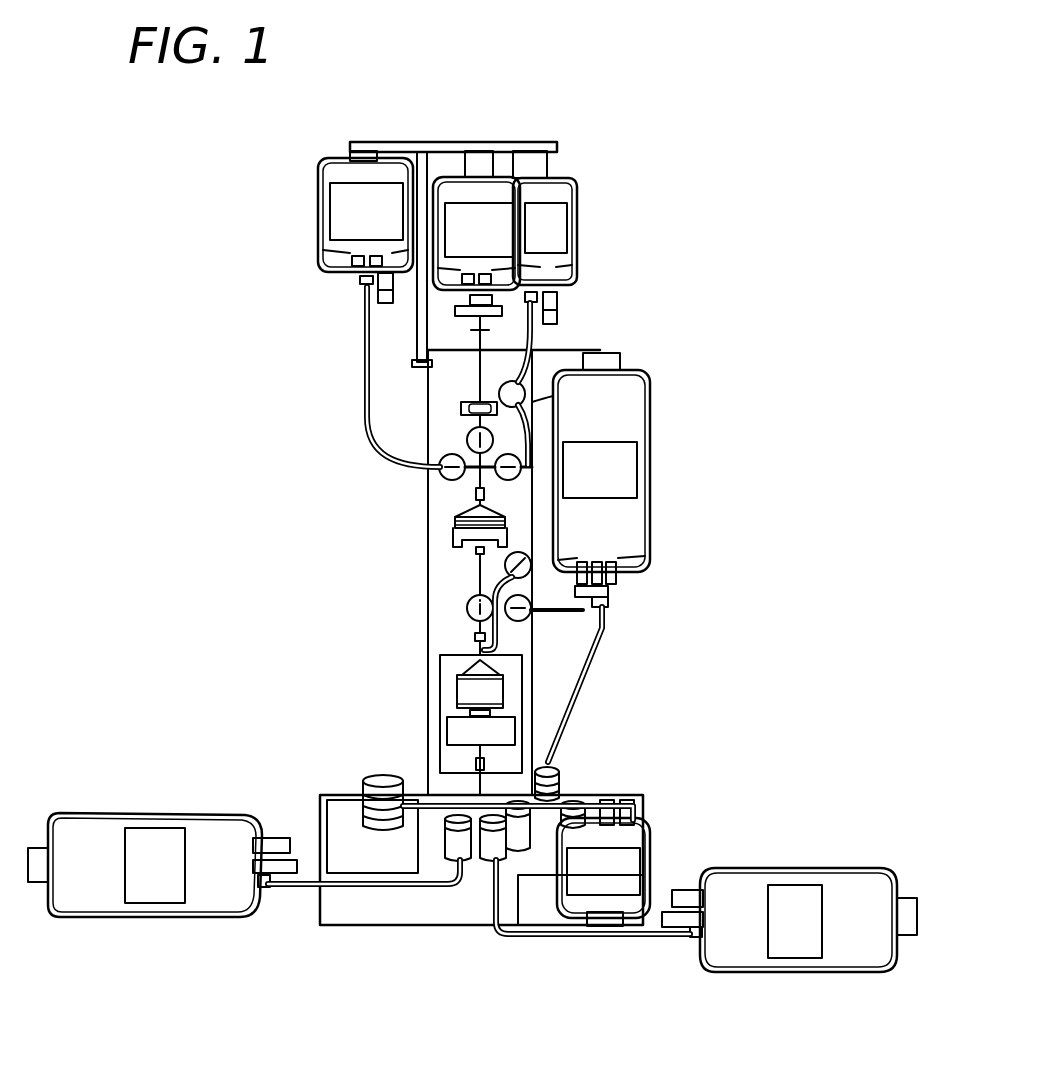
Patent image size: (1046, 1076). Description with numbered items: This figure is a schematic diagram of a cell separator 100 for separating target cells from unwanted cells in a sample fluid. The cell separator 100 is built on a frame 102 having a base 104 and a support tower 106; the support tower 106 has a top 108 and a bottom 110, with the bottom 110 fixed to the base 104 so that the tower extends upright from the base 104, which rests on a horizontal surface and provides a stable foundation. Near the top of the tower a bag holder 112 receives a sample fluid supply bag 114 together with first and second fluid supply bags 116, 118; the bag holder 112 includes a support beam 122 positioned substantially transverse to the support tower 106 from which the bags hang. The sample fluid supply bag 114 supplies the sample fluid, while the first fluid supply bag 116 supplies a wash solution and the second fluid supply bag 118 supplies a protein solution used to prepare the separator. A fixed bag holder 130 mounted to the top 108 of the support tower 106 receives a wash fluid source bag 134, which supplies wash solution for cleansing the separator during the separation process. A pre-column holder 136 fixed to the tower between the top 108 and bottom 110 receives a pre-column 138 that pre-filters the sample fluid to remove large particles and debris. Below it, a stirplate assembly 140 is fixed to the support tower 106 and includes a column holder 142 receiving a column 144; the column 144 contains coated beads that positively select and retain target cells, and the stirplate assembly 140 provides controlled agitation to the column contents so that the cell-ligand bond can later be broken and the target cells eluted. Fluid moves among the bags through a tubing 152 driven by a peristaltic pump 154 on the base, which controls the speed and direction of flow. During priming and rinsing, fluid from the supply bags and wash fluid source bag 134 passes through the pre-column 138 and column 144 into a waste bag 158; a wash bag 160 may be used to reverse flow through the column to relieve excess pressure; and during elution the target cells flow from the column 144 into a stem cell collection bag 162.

The cell separator 100 is at (687, 297).
The frame 102 is at (347, 557).
The base 104 is at (396, 927).
The support tower 106 is at (428, 607).
The top 108 is at (425, 377).
The bottom 110 is at (428, 752).
The bag holder 112 is at (588, 153).
The sample fluid supply bag 114 is at (449, 177).
The first fluid supply bag 116 is at (318, 185).
The second fluid supply bag 118 is at (578, 208).
The support beam 122 is at (483, 142).
The fixed bag holder 130 is at (570, 353).
The wash fluid source bag 134 is at (647, 422).
The pre-column holder 136 is at (447, 543).
The pre-column 138 is at (458, 514).
The stirplate assembly 140 is at (513, 667).
The column holder 142 is at (505, 733).
The column 144 is at (460, 688).
The tubing 152 is at (365, 358).
The peristaltic pump 154 is at (373, 777).
The waste bag 158 is at (163, 915).
The wash bag 160 is at (773, 972).
The stem cell collection bag 162 is at (653, 852).